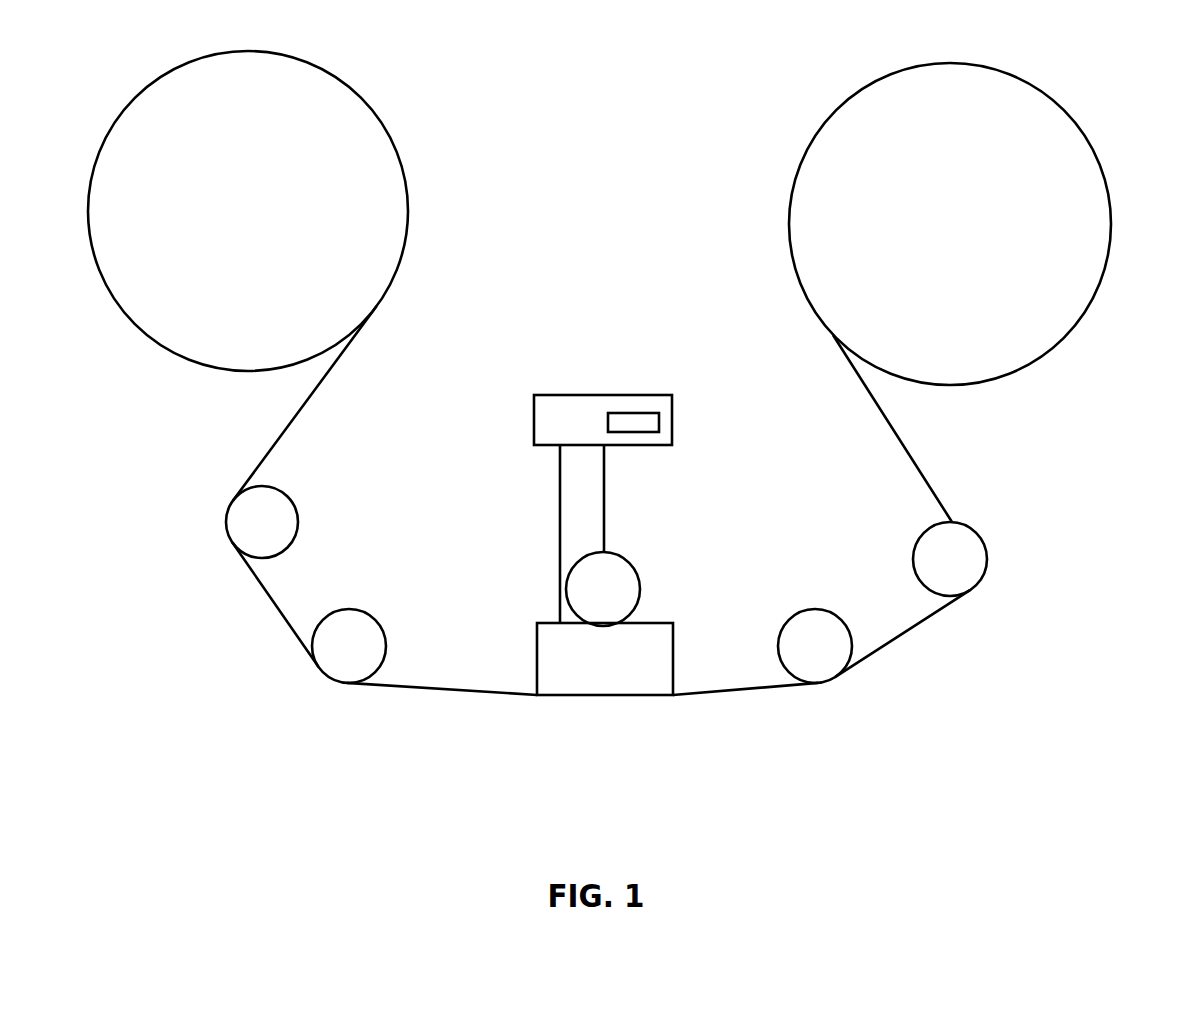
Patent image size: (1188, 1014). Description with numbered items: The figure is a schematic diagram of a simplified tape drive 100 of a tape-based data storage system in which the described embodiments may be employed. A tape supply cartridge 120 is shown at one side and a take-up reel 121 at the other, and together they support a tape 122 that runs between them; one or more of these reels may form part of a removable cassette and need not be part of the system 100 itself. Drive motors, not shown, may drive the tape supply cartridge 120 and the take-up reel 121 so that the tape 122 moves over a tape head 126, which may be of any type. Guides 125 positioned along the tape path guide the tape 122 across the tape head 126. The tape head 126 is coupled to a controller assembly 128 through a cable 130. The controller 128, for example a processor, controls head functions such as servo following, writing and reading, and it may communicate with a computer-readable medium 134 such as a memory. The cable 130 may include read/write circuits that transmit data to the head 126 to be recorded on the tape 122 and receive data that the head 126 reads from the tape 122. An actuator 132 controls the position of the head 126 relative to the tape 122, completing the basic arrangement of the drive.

The tape drive 100 is at (199, 434).
The tape supply cartridge 120 is at (406, 178).
The take-up reel 121 is at (1050, 352).
The tape 122 is at (447, 692).
The guides 125 is at (348, 608).
The tape head 126 is at (673, 657).
The controller assembly 128 is at (603, 395).
The cable 130 is at (560, 583).
The actuator 132 is at (633, 560).
The computer-readable medium 134 is at (651, 413).